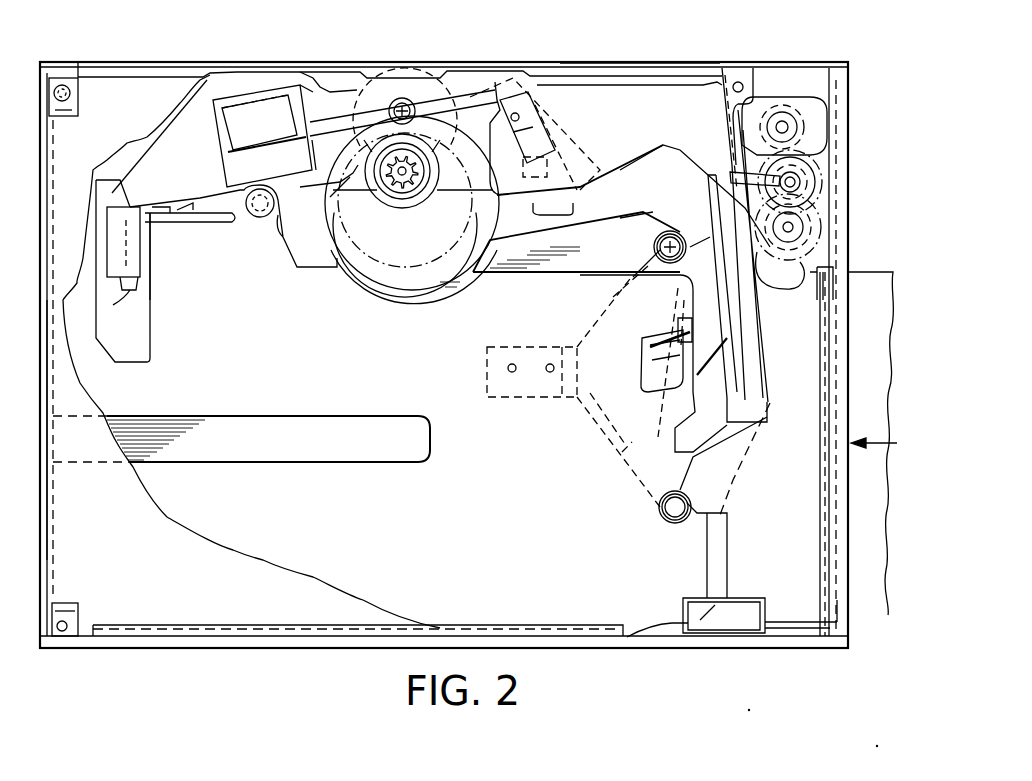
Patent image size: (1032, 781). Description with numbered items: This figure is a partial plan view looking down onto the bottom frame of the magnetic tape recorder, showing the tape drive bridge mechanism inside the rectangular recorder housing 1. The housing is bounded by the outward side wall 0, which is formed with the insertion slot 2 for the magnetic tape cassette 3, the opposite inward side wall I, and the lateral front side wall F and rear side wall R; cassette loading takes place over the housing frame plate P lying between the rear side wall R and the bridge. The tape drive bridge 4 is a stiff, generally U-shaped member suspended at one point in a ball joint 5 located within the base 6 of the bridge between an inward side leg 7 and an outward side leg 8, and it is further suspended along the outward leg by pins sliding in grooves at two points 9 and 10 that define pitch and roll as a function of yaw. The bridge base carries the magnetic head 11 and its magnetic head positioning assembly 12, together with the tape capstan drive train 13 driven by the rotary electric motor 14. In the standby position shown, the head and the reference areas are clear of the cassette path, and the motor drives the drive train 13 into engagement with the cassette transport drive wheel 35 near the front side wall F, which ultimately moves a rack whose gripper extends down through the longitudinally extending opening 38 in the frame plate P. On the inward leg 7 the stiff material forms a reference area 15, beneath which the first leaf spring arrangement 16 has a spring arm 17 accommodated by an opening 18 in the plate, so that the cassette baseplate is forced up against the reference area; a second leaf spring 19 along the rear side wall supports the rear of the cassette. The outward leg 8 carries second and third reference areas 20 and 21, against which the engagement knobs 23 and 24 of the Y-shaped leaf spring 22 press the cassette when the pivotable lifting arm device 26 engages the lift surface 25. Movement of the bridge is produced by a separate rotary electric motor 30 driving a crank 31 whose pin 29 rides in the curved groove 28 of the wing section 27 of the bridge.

The recorder housing 1 is at (230, 665).
The insertion slot 2 is at (847, 316).
The magnetic tape cassette 3 is at (880, 270).
The tape drive bridge 4 is at (283, 248).
The ball joint 5 is at (272, 208).
The base of the bridge 6 is at (617, 110).
The inward side leg 7 is at (104, 224).
The outward side leg 8 is at (750, 343).
The suspension point 9 is at (752, 480).
The suspension point 10 is at (712, 128).
The magnetic head 11 is at (582, 193).
The magnetic head positioning assembly 12 is at (318, 92).
The tape capstan drive train 13 is at (412, 212).
The rotary electric motor 14 is at (492, 209).
The reference area 15 is at (141, 264).
The first leaf spring arrangement 16 is at (146, 222).
The spring arm 17 is at (124, 304).
The opening 18 is at (150, 338).
The second leaf spring 19 is at (651, 612).
The second reference area 20 is at (700, 160).
The third reference area 21 is at (740, 407).
The leaf spring 22 is at (585, 317).
The engagement knob 23 is at (658, 245).
The engagement knob 24 is at (670, 508).
The lift surface 25 is at (652, 366).
The pivotable lifting arm device 26 is at (668, 343).
The wing section 27 is at (802, 165).
The curved groove 28 is at (782, 185).
The pin 29 is at (802, 183).
The rotary electric motor 30 is at (818, 105).
The crank 31 is at (802, 229).
The cassette transport drive wheel 35 is at (405, 64).
The longitudinally extending opening 38 is at (321, 455).
The outward side wall 0 is at (852, 167).
The front side wall F is at (597, 56).
The inward side wall I is at (40, 413).
The housing frame plate P is at (378, 362).
The rear side wall R is at (372, 656).